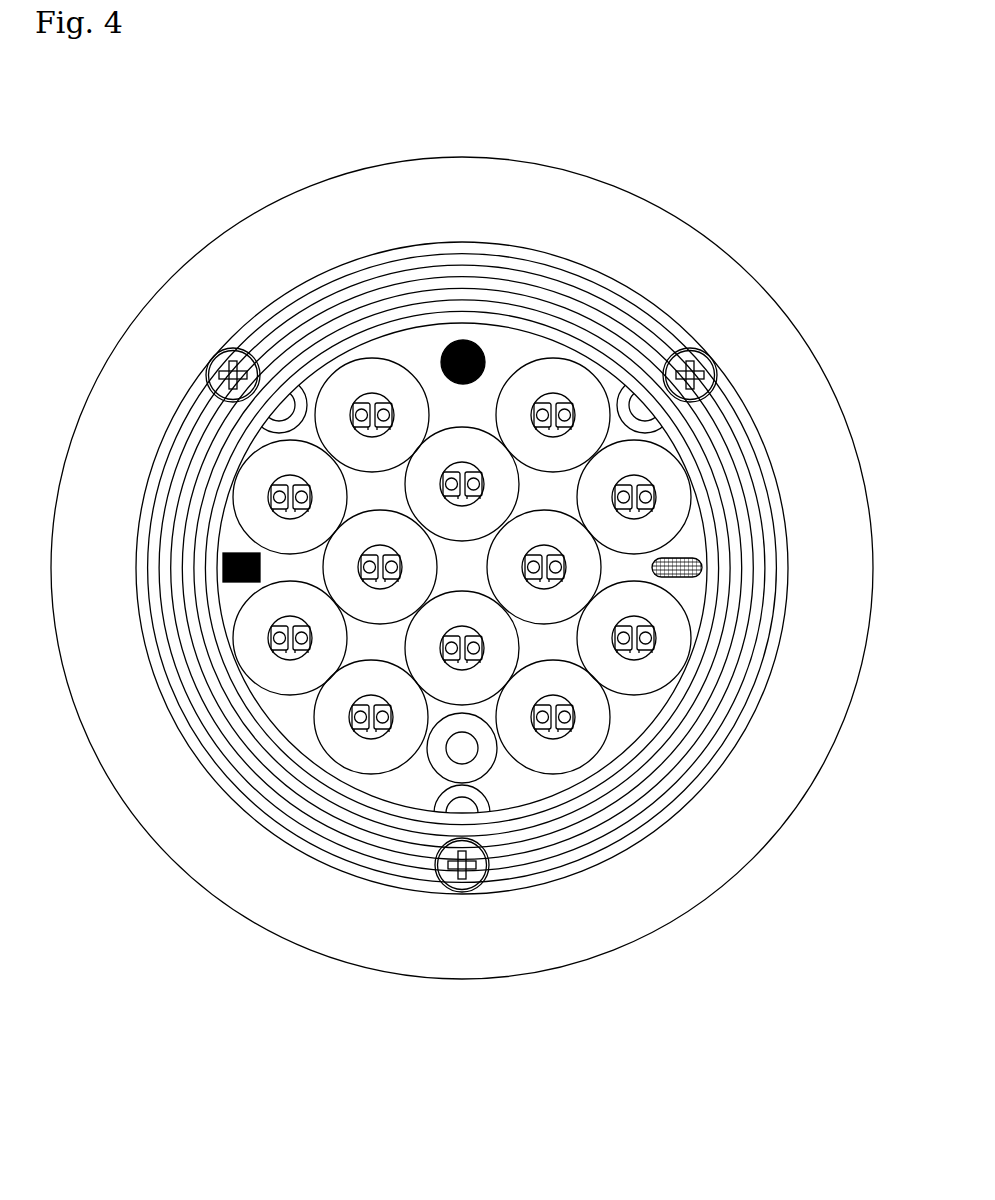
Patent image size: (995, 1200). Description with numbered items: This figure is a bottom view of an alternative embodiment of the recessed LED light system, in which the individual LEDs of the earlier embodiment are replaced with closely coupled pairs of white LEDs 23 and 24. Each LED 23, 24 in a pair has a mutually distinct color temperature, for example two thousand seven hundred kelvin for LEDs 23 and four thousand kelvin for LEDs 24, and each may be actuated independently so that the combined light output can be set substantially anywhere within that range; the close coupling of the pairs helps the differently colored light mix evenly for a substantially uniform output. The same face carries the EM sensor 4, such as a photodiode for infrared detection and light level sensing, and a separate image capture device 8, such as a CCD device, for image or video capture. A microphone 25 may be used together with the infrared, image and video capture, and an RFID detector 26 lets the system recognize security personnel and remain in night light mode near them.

The EM sensor 4 is at (476, 760).
The image capture device 8 is at (478, 350).
The white LED 23 is at (558, 428).
The white LED 24 is at (533, 405).
The microphone 25 is at (698, 578).
The RFID detector 26 is at (228, 582).